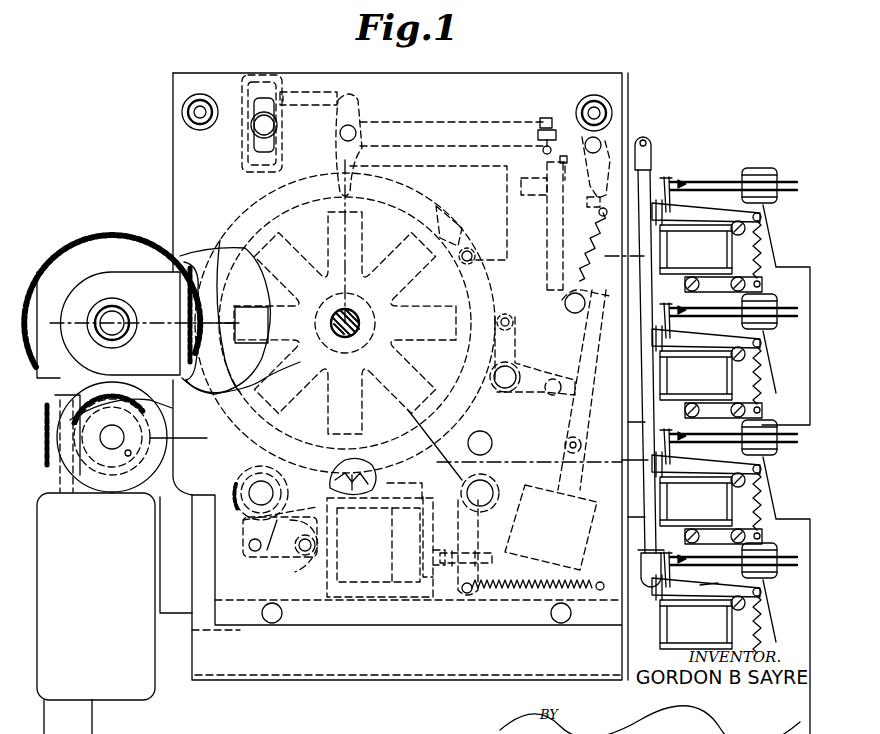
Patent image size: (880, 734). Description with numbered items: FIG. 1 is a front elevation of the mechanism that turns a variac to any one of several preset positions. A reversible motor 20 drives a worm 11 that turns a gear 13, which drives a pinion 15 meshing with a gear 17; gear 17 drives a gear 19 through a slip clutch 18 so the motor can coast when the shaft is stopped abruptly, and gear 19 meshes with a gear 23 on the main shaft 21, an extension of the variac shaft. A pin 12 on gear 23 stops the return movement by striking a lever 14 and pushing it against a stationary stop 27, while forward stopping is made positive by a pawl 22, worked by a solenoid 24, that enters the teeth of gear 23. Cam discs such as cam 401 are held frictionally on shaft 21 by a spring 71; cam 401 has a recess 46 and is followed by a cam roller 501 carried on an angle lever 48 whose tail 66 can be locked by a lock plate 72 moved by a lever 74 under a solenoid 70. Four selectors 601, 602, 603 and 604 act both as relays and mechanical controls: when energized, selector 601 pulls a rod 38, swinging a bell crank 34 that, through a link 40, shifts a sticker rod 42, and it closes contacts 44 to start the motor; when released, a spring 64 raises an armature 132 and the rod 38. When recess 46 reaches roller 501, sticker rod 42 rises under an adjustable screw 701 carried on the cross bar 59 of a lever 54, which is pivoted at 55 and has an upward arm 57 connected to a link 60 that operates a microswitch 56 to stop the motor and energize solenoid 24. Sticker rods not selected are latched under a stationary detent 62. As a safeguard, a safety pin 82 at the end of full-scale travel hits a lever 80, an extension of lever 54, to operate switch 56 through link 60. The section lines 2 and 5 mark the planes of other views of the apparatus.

The section line 2- 2 is at (47, 315).
The section line 5- 5 is at (160, 430).
The worm 11 is at (54, 441).
The pin 12 is at (492, 407).
The gear 13 is at (118, 470).
The lever 14 is at (456, 432).
The pinion 15 is at (130, 453).
The gear 17 is at (174, 412).
The slip clutch 18 is at (446, 484).
The gear 19 is at (108, 233).
The motor 20 is at (132, 700).
The main shaft 21 is at (358, 314).
The pawl 22 is at (368, 480).
The gear 23 is at (183, 266).
The solenoid 24 is at (332, 575).
The stationary stop 27 is at (492, 443).
The bell crank 34 is at (646, 135).
The rod 38 is at (645, 560).
The link 40 is at (568, 210).
The sticker rod 42 is at (547, 237).
The contacts 44 is at (713, 575).
The recess 46 is at (452, 224).
The angle lever 48 is at (518, 358).
The lever 54 is at (420, 121).
The pivot 55 is at (340, 133).
The microswitch 56 is at (268, 76).
The upward arm 57 is at (362, 113).
The cross bar 59 is at (551, 128).
The link 60 is at (323, 92).
The detent 62 is at (563, 156).
The spring 64 is at (763, 629).
The tail 66 is at (575, 397).
The solenoid 70 is at (551, 527).
The spring 71 is at (366, 228).
The lock plate 72 is at (582, 390).
The lever 74 is at (592, 293).
The lever 80 is at (340, 170).
The safety pin 82 is at (473, 259).
The armature 132 is at (703, 591).
The cam disc 401 is at (200, 268).
The cam roller 501 is at (509, 316).
The selector 601 is at (724, 598).
The selector 602 is at (731, 577).
The selector 603 is at (724, 356).
The selector 604 is at (731, 296).
The adjustable screw 701 is at (546, 118).